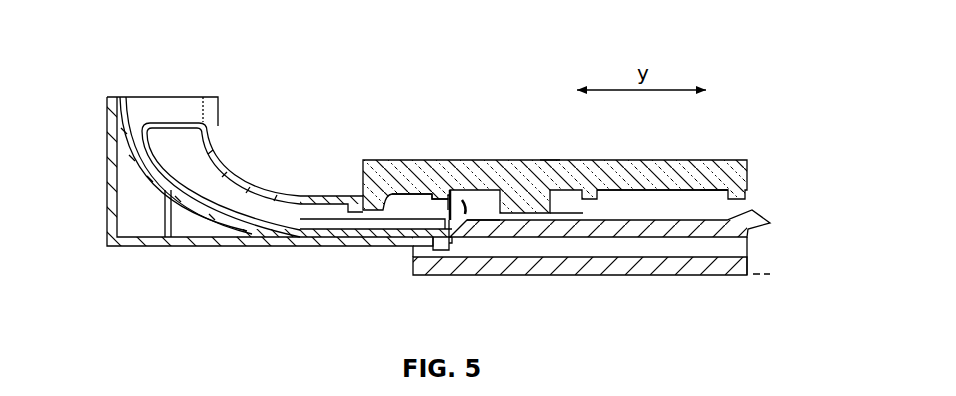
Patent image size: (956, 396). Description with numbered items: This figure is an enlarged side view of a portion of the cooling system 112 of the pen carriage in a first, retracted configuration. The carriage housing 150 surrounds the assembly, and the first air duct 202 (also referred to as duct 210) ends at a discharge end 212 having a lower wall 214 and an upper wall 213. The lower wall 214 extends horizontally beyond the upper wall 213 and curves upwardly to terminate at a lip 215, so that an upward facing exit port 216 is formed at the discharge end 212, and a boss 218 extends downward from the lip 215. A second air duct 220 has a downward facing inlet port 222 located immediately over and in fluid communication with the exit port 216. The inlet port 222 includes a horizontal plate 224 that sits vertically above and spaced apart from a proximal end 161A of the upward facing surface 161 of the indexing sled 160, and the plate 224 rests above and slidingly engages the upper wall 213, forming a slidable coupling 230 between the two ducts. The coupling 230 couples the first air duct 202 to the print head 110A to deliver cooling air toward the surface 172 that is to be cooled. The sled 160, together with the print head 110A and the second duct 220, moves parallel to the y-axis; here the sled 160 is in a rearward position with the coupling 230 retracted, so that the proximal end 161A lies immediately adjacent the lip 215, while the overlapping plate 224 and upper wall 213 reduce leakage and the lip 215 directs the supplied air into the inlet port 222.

The cooling system 112 is at (121, 31).
The housing 150 is at (107, 211).
The duct 210 is at (213, 117).
The first air duct 202 is at (160, 116).
The horizontal plate 224 is at (342, 175).
The discharge end 212 is at (352, 240).
The upper wall 213 is at (303, 214).
The lower wall 214 is at (405, 246).
The boss 218 is at (450, 249).
The slidable coupling 230 is at (352, 158).
The exit port 216 is at (418, 198).
The inlet port 222 is at (443, 190).
The lip 215 is at (470, 198).
The proximal end 161A is at (473, 215).
The print head 110A is at (549, 162).
The air duct 220 is at (662, 199).
The upward facing surface 161 is at (712, 212).
The surface 172 is at (637, 190).
The indexing sled 160 is at (778, 219).